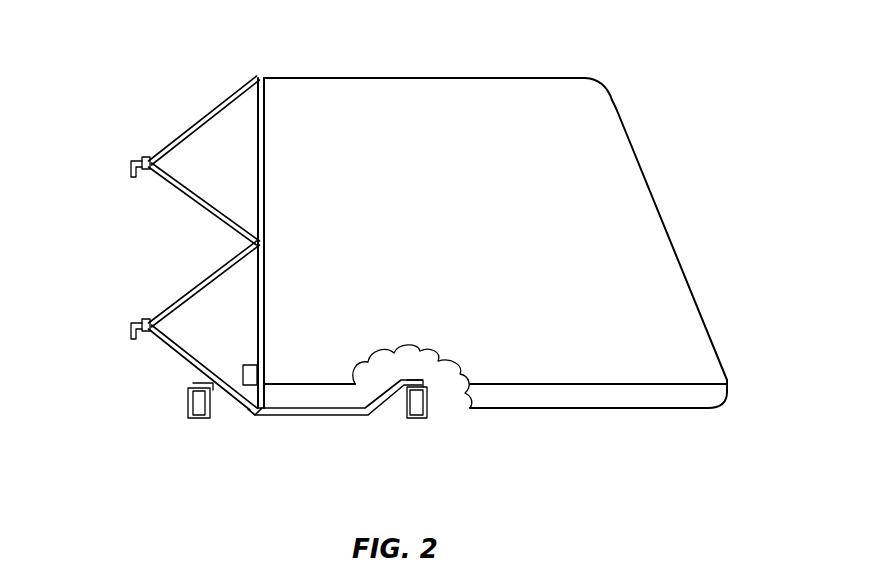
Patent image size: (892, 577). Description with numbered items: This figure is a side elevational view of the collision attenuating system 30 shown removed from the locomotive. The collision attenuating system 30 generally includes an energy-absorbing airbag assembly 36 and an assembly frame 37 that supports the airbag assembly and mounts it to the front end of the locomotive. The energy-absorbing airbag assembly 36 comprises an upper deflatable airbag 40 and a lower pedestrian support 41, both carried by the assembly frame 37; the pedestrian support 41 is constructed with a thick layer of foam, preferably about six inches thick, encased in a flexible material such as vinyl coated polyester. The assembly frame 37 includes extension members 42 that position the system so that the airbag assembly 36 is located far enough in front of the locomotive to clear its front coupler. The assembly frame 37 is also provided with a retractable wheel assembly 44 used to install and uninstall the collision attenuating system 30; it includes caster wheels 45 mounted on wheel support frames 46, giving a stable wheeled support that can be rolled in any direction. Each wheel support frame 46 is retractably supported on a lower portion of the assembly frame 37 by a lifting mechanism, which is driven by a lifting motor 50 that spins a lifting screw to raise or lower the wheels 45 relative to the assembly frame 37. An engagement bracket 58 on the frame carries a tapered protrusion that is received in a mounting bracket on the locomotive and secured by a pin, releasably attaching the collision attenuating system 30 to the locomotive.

The collision attenuating system 30 is at (619, 48).
The energy-absorbing airbag assembly 36 is at (623, 103).
The assembly frame 37 is at (267, 68).
The upper deflatable airbag 40 is at (462, 88).
The lower pedestrian support 41 is at (712, 398).
The extension members 42 is at (204, 114).
The retractable wheel assembly 44 is at (263, 430).
The wheels 45 is at (198, 420).
The wheel support frames 46 is at (310, 414).
The lifting motor 50 is at (248, 364).
The engagement bracket 58 is at (130, 170).